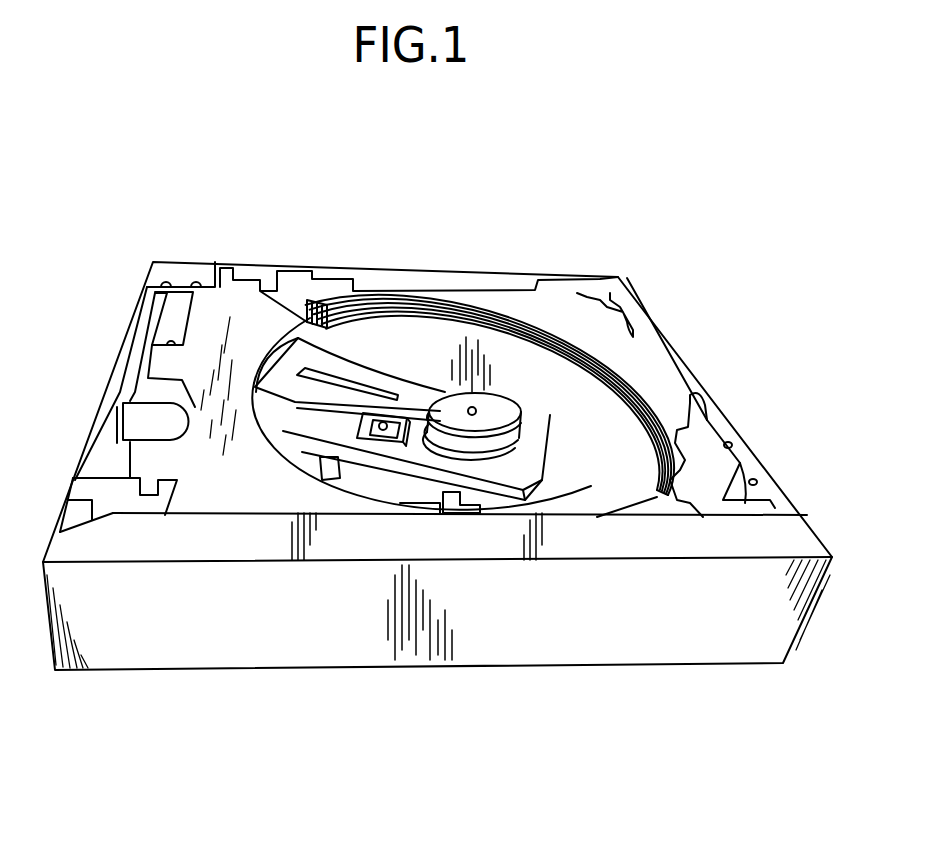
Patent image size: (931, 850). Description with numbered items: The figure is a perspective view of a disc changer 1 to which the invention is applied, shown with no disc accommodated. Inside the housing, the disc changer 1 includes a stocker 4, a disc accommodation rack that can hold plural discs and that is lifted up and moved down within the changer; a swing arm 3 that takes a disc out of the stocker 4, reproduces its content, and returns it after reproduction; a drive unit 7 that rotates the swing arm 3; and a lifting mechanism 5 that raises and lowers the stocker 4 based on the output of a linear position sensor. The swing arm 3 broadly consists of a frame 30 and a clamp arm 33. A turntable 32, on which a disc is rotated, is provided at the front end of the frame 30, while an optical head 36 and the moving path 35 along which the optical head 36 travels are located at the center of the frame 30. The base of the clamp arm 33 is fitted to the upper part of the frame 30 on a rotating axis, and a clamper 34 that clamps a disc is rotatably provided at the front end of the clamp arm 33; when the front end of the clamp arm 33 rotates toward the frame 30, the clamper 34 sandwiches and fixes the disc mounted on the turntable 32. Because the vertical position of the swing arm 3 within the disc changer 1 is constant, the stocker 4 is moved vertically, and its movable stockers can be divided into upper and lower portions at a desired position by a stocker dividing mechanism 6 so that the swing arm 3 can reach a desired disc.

The disc changer 1 is at (552, 203).
The swing arm 3 is at (433, 382).
The stocker 4 is at (633, 363).
The lifting mechanism 5 is at (617, 292).
The stocker dividing mechanism 6 is at (356, 285).
The drive unit 7 is at (237, 327).
The frame 30 is at (530, 452).
The turntable 32 is at (527, 480).
The clamp arm 33 is at (403, 387).
The clamper 34 is at (513, 423).
The moving path 35 is at (330, 420).
The optical head 36 is at (383, 430).